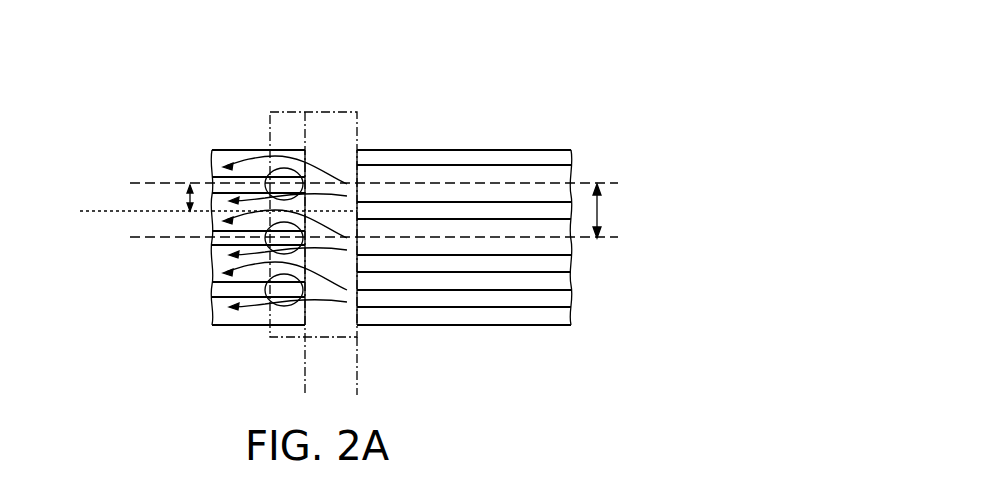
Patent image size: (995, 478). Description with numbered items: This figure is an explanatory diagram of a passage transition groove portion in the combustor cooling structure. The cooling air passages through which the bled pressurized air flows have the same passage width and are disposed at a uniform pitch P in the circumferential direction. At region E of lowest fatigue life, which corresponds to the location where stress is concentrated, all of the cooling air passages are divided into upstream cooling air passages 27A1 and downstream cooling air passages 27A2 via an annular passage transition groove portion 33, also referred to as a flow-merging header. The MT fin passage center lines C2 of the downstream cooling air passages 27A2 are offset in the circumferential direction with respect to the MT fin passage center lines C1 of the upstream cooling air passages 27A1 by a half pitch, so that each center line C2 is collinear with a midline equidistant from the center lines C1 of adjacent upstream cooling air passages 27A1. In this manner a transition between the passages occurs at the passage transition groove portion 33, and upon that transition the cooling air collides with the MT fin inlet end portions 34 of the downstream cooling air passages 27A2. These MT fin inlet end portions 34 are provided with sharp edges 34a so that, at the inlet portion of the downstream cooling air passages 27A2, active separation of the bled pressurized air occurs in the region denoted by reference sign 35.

The upstream cooling air passages 27A1 is at (473, 285).
The downstream cooling air passages 27A2 is at (230, 178).
The passage transition groove portion 33 is at (338, 160).
The MT fin inlet end portions 34 is at (309, 188).
The sharp edges 34a is at (279, 163).
The region of active separation 35 is at (307, 170).
The region of lowest fatigue life E is at (320, 108).
The MT fin passage center lines of the upstream cooling air passages C1 is at (601, 176).
The MT fin passage center lines of the downstream cooling air passages C2 is at (153, 216).
The pitch P is at (605, 211).